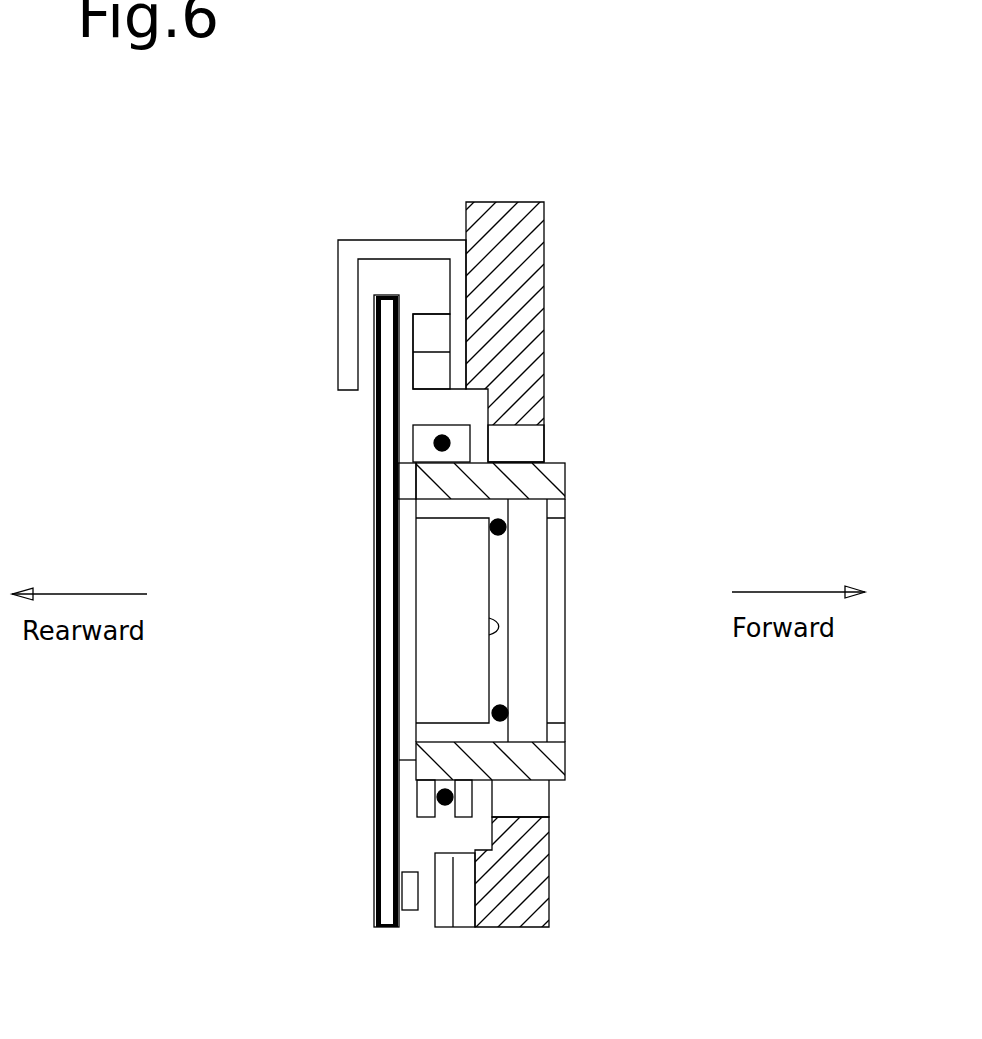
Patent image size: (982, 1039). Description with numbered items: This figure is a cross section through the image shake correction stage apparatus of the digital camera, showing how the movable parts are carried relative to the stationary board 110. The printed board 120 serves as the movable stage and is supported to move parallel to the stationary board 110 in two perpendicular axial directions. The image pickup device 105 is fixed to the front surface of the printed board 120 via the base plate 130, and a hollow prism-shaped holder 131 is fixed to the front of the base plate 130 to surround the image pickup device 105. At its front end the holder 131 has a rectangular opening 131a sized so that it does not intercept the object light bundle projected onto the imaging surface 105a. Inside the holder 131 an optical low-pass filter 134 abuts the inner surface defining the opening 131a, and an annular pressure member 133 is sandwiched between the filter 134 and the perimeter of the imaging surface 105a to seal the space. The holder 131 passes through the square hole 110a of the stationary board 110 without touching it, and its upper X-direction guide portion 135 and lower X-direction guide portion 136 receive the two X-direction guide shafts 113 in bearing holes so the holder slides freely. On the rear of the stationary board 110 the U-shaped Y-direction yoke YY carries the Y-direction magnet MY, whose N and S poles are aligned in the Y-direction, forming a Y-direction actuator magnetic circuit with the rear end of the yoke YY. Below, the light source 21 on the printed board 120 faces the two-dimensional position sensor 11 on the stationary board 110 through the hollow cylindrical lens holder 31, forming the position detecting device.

The stationary board 110 is at (535, 228).
The hole 110a is at (532, 440).
The X-direction guide shafts 113 is at (430, 443).
The printed board 120 is at (377, 705).
The base plate 130 is at (405, 568).
The holder 131 is at (555, 763).
The rectangular opening 131a is at (560, 718).
The pressure member 133 is at (515, 517).
The optical low-pass filter 134 is at (525, 565).
The upper X-direction guide portion 135 is at (414, 466).
The lower X-direction guide portion 136 is at (462, 808).
The image pickup device 105 is at (442, 667).
The imaging surface 105a is at (490, 618).
The light source 21 is at (408, 900).
The lens holder 31 is at (443, 918).
The two-dimensional position sensor 11 is at (467, 928).
The Y-direction yoke YY is at (338, 313).
The Y-direction magnet MY is at (415, 343).